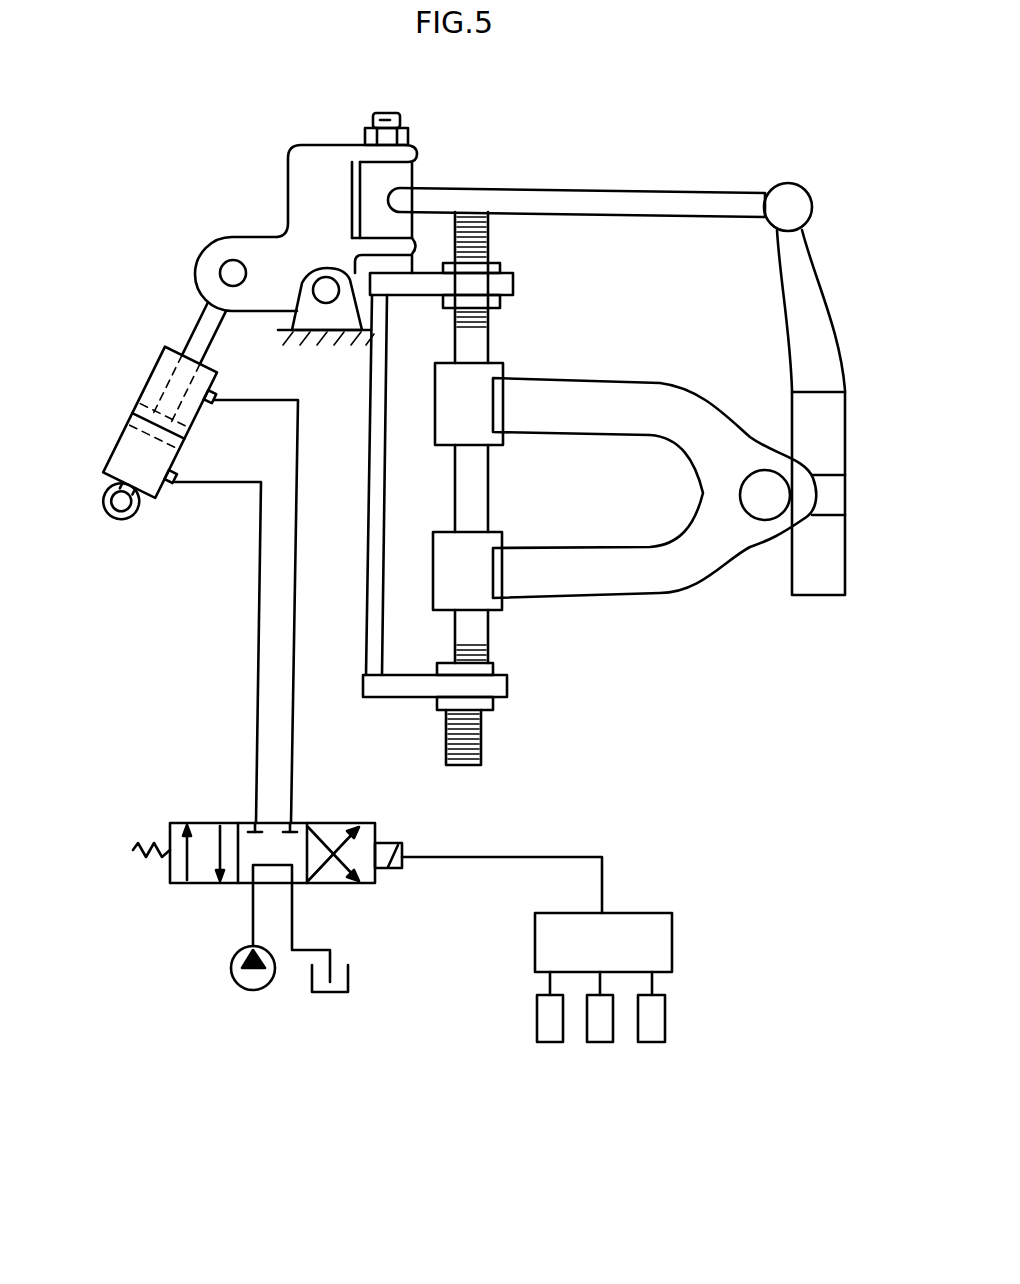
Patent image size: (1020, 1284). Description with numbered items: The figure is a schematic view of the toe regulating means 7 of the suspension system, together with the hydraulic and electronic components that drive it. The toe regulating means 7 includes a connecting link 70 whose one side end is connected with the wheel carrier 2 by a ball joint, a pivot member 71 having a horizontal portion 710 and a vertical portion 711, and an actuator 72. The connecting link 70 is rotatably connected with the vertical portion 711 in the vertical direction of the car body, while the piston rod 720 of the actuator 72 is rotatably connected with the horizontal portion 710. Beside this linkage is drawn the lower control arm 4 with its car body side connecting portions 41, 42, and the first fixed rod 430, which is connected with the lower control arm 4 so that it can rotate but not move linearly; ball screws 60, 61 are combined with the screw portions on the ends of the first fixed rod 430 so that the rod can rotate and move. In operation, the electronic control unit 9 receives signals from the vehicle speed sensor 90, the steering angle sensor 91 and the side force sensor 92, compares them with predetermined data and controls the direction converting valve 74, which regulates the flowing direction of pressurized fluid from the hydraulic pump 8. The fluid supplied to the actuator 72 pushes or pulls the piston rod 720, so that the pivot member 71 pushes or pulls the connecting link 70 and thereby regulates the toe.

The wheel carrier 2 is at (833, 415).
The lower control arm 4 is at (697, 570).
The toe regulating means 7 is at (541, 151).
The hydraulic pump 8 is at (233, 983).
The electronic control unit 9 is at (612, 957).
The connecting portion 41 is at (498, 603).
The connecting portion 42 is at (495, 373).
The ball screw 60 is at (488, 668).
The ball screw 61 is at (492, 302).
The connecting link 70 is at (618, 203).
The pivot member 71 is at (287, 240).
The actuator 72 is at (114, 395).
The direction converting valve 74 is at (184, 893).
The vehicle speed sensor 90 is at (550, 1032).
The steering angle sensor 91 is at (600, 1032).
The side force sensor 92 is at (652, 1032).
The first fixed rod 430 is at (472, 502).
The horizontal portion 710 is at (238, 252).
The vertical portion 711 is at (332, 152).
The piston rod 720 is at (207, 327).